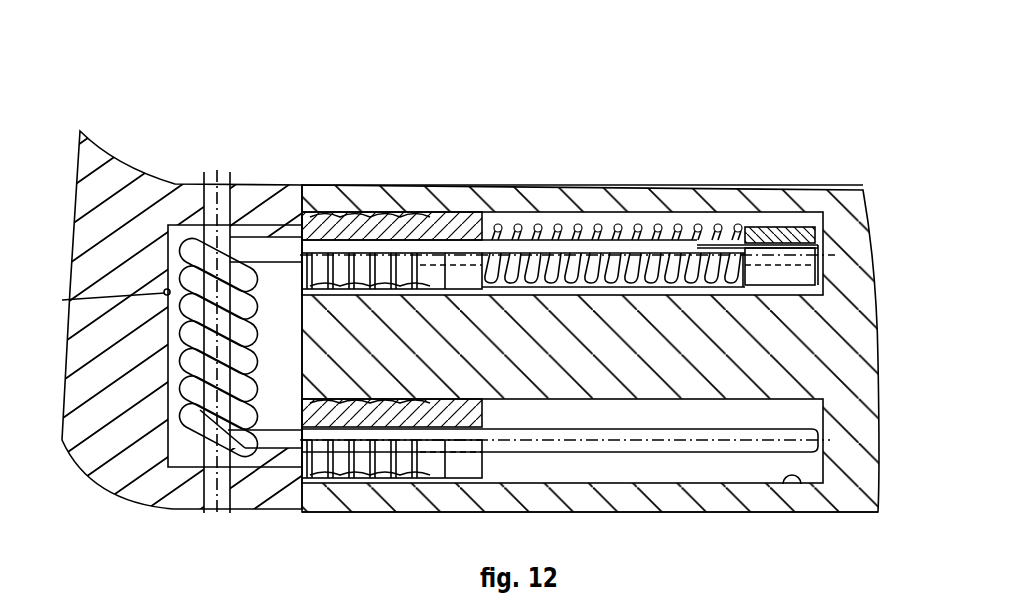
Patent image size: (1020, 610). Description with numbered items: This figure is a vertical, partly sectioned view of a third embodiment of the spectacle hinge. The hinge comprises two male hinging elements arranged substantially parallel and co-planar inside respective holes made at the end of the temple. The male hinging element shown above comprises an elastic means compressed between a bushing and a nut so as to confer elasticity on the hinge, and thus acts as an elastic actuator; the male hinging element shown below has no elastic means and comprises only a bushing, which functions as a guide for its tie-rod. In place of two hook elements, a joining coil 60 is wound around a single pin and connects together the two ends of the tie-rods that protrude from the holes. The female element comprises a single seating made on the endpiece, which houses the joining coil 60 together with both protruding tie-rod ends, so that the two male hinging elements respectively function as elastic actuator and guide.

The joining coil 60 is at (260, 307).